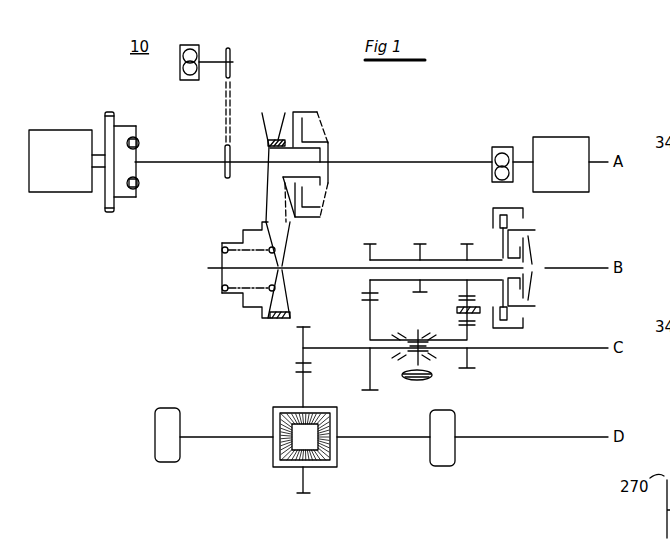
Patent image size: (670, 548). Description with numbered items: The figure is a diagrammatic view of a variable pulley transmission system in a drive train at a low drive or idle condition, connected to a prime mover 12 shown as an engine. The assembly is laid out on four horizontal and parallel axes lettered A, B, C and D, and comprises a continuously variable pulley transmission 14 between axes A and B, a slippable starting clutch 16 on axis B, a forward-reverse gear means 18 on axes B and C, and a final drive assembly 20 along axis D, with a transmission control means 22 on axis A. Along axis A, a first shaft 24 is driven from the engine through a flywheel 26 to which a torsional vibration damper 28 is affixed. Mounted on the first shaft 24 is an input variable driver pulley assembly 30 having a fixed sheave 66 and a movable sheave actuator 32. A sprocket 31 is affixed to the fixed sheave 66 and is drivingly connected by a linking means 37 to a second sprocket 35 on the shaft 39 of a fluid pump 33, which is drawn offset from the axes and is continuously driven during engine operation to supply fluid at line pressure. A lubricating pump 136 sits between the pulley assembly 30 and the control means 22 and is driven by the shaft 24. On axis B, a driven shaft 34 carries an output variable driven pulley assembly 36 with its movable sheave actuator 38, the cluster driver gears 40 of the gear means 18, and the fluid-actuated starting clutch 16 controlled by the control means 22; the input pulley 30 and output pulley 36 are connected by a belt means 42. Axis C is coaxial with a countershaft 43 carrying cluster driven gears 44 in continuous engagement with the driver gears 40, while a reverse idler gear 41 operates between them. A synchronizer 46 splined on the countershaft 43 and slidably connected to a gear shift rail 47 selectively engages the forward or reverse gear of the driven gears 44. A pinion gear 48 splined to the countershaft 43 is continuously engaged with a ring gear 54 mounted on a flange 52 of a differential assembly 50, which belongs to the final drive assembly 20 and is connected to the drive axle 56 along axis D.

The prime mover 12 is at (58, 127).
The continuously variable pulley transmission 14 is at (317, 141).
The slippable starting clutch 16 is at (532, 220).
The forward-reverse gear means 18 is at (356, 293).
The final drive assembly 20 is at (305, 449).
The transmission control means 22 is at (555, 137).
The first shaft 24 is at (176, 162).
The flywheel 26 is at (109, 110).
The torsional vibration damper 28 is at (140, 189).
The input variable driver pulley assembly 30 is at (328, 150).
The sprocket 31 is at (222, 179).
The movable sheave actuator 32 is at (322, 191).
The fluid pump 33 is at (184, 44).
The driven shaft 34 is at (299, 265).
The second sprocket 35 is at (232, 48).
The output variable driven pulley assembly 36 is at (222, 300).
The linking means 37 is at (222, 101).
The movable sheave actuator 38 is at (220, 278).
The shaft 39 is at (219, 59).
The cluster driver gears 40 is at (397, 245).
The reverse idler gear 41 is at (454, 308).
The belt means 42 is at (280, 134).
The countershaft 43 is at (489, 348).
The cluster driven gears 44 is at (364, 338).
The synchronizer 46 is at (430, 370).
The gear shift rail 47 is at (408, 378).
The pinion gear 48 is at (302, 332).
The differential assembly 50 is at (325, 472).
The flange 52 is at (308, 390).
The ring gear 54 is at (298, 376).
The drive axle 56 is at (220, 437).
The fixed sheave 66 is at (262, 206).
The lubricating pump 136 is at (502, 143).